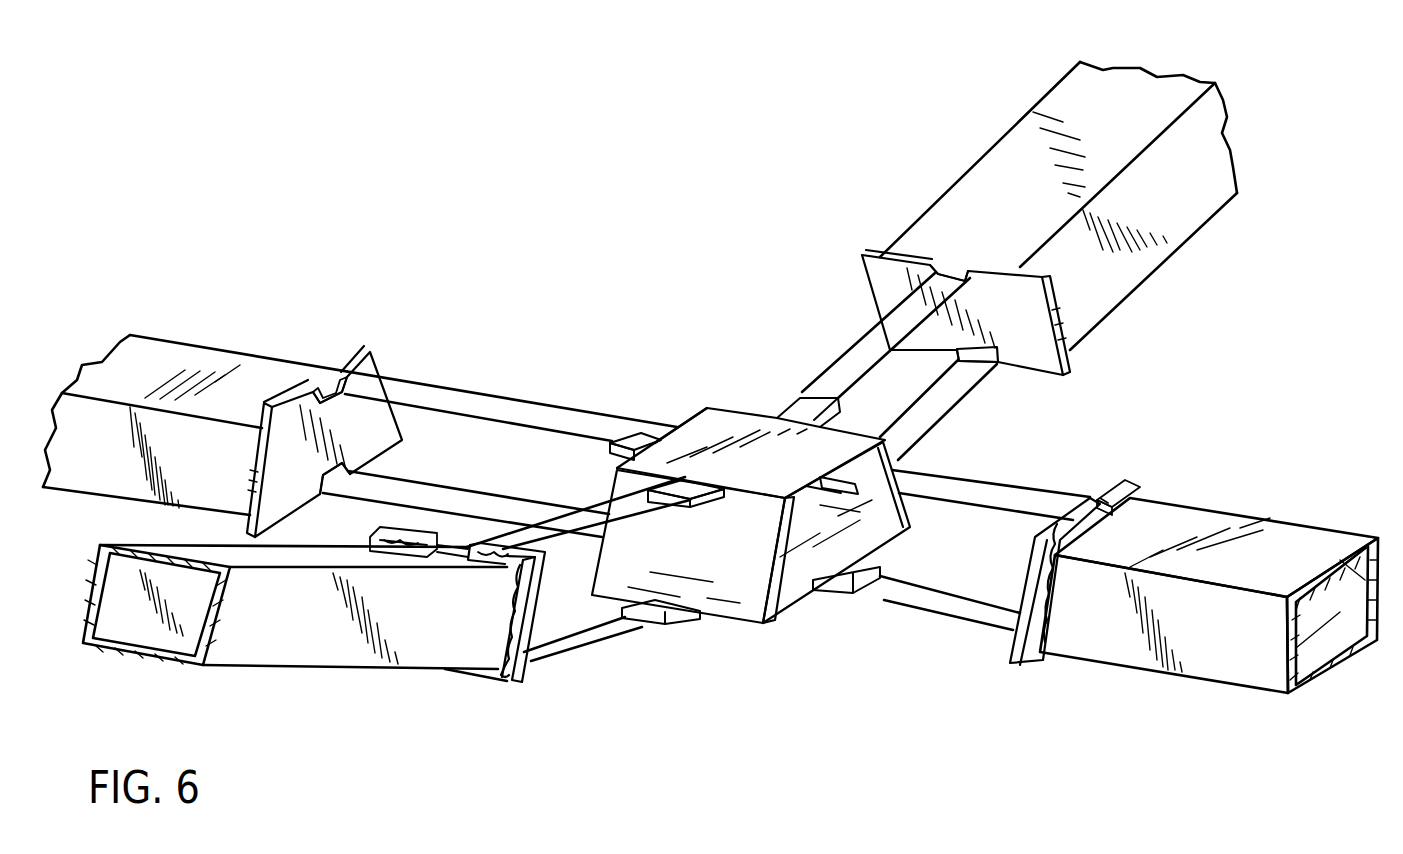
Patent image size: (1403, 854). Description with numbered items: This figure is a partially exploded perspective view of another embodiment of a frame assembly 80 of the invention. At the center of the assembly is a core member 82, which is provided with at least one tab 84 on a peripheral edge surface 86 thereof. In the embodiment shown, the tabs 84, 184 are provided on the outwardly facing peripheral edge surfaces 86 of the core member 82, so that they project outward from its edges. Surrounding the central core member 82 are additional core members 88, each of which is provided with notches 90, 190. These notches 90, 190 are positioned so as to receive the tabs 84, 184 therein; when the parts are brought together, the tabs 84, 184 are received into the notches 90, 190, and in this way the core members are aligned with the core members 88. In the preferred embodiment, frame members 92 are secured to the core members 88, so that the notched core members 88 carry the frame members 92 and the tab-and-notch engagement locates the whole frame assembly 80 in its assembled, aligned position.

The frame assembly 80 is at (652, 384).
The core member 82 is at (722, 415).
The tab 84 is at (640, 430).
The peripheral edge surface 86 is at (803, 483).
The core member 88 is at (367, 352).
The notch 90 is at (326, 372).
The frame member 92 is at (232, 340).
The tab 184 is at (675, 618).
The notch 190 is at (327, 492).